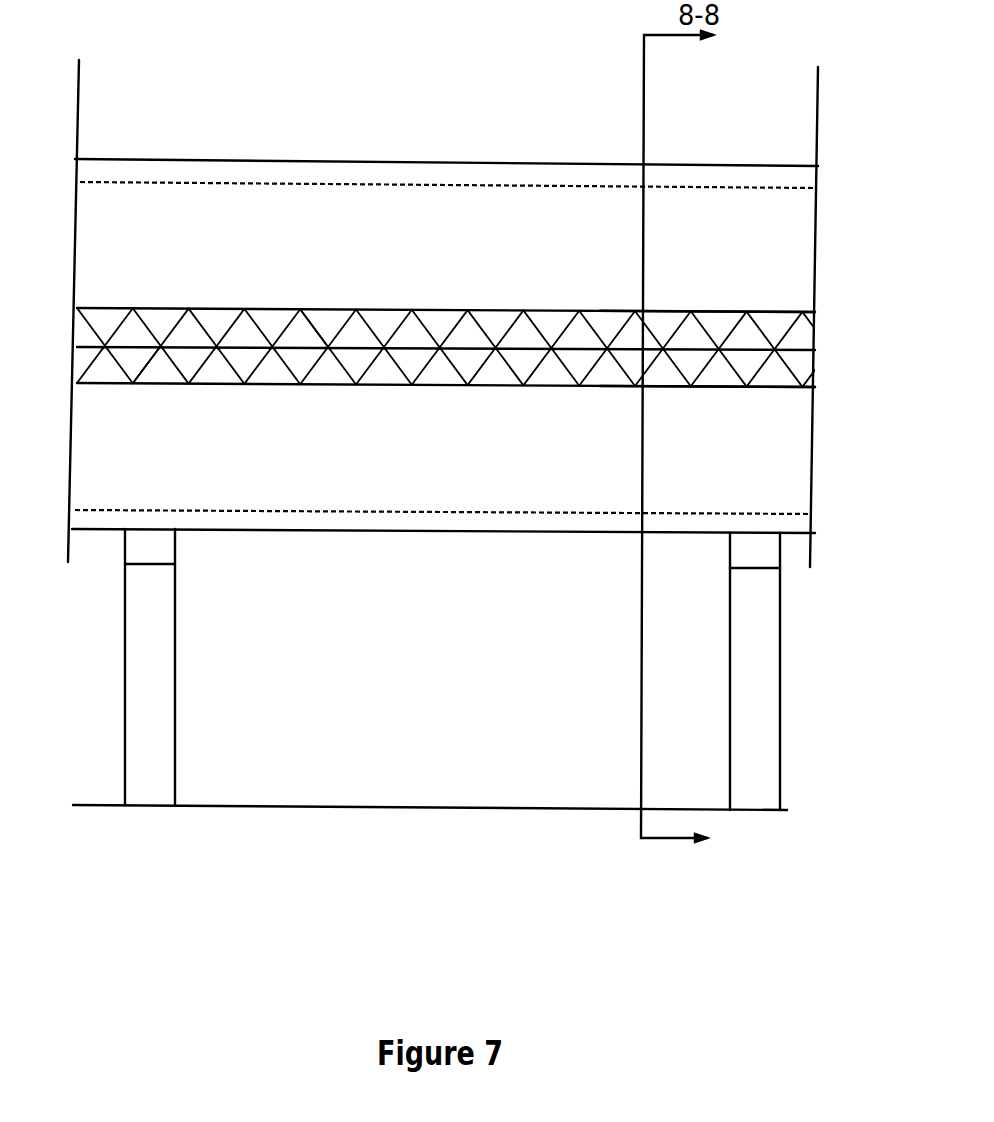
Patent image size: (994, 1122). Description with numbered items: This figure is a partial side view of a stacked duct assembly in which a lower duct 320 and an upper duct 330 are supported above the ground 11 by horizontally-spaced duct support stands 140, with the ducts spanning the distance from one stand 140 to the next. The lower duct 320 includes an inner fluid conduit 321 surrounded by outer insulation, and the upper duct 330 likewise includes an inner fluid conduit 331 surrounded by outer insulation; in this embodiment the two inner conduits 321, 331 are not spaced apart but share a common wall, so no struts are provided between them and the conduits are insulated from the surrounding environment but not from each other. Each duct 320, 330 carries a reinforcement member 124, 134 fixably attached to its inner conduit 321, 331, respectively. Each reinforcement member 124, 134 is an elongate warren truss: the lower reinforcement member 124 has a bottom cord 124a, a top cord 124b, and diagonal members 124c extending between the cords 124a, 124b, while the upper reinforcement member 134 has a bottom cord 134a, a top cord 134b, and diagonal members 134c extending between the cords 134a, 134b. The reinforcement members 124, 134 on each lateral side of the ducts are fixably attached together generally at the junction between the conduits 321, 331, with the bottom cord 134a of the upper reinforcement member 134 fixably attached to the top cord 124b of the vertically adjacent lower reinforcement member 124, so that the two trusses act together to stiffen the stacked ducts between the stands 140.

The ground 11 is at (330, 805).
The duct support stand 140 is at (190, 617).
The lower duct 320 is at (395, 532).
The inner fluid conduit 321 is at (242, 510).
The upper duct 330 is at (358, 162).
The inner fluid conduit 331 is at (527, 185).
The reinforcement member 124 is at (280, 385).
The bottom cord 124a is at (665, 390).
The top cord 124b is at (446, 408).
The diagonal members 124c is at (174, 402).
The reinforcement member 134 is at (208, 307).
The bottom cord 134a is at (458, 353).
The top cord 134b is at (660, 310).
The diagonal members 134c is at (345, 295).